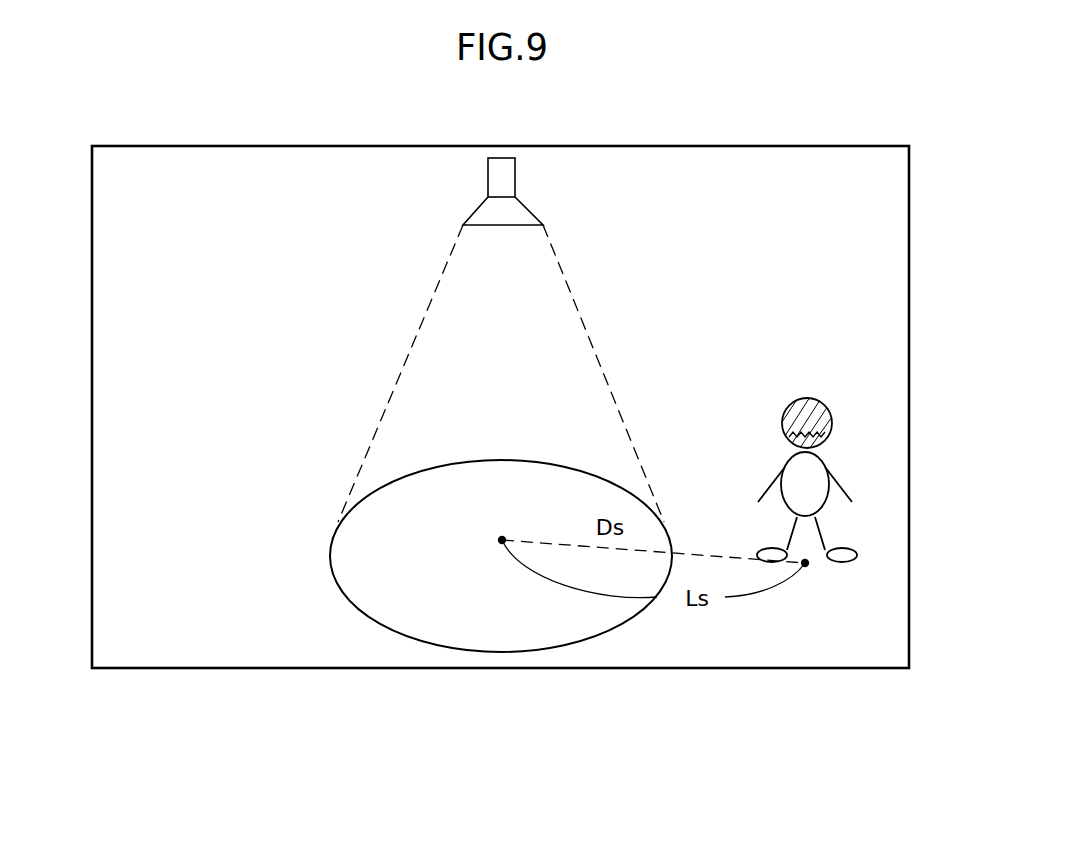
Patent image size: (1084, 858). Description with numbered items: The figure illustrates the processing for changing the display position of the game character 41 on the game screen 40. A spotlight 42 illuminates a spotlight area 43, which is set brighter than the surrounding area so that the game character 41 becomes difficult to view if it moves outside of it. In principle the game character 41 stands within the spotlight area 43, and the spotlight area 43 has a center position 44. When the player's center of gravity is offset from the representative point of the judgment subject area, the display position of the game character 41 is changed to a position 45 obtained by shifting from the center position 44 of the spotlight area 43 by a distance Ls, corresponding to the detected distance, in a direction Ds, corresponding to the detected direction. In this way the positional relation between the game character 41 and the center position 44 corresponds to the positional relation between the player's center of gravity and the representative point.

The game screen 40 is at (823, 668).
The game character 41 is at (803, 397).
The spotlight 42 is at (502, 172).
The spotlight area 43 is at (530, 642).
The center position of the spotlight area 44 is at (502, 540).
The position 45 is at (805, 563).